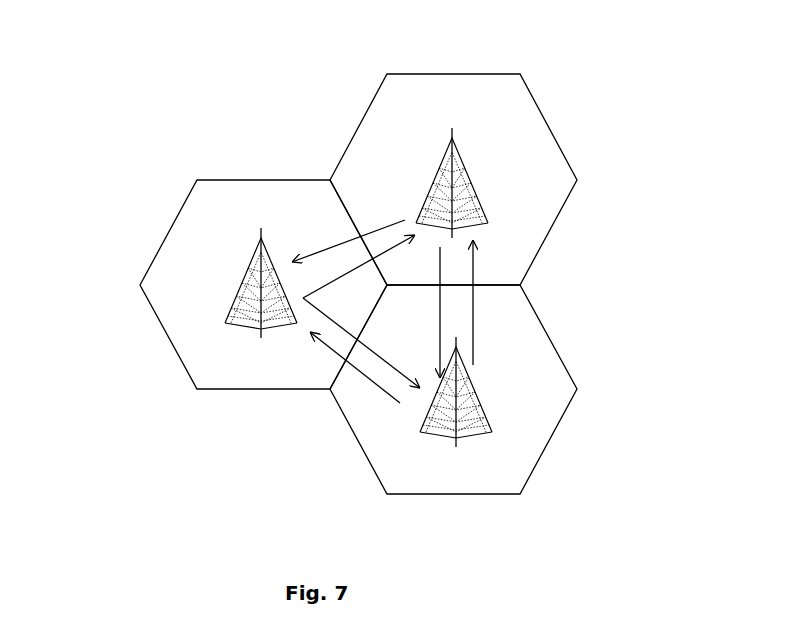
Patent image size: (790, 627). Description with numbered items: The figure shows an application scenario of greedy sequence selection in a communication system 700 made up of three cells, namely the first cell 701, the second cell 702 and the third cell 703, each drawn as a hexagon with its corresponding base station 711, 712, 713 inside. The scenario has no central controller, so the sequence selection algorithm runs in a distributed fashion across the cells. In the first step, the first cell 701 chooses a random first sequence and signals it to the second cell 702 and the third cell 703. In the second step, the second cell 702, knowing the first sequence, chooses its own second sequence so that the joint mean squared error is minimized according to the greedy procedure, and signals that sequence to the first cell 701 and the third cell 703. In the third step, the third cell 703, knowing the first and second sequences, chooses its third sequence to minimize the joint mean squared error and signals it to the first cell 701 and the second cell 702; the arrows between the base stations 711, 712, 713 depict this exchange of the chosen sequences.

The communication system 700 is at (163, 502).
The cell 1 701 is at (143, 300).
The cell 2 702 is at (532, 100).
The cell 3 703 is at (547, 445).
The base station 711 is at (247, 270).
The base station 712 is at (480, 202).
The base station 713 is at (473, 391).